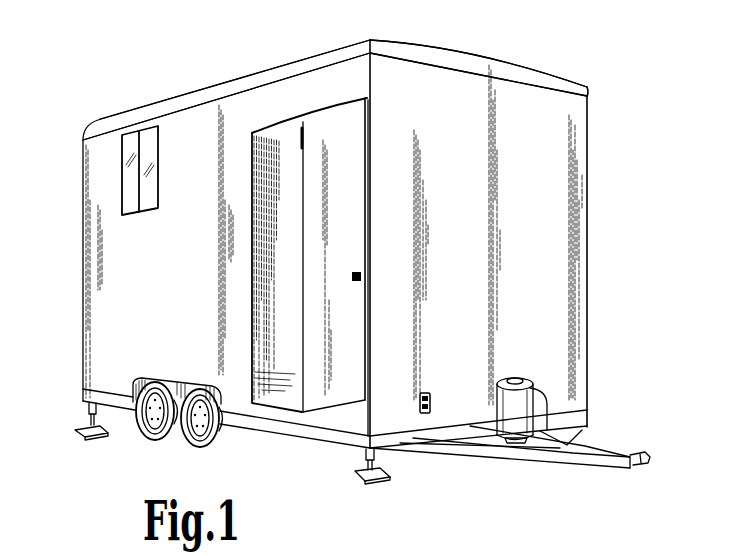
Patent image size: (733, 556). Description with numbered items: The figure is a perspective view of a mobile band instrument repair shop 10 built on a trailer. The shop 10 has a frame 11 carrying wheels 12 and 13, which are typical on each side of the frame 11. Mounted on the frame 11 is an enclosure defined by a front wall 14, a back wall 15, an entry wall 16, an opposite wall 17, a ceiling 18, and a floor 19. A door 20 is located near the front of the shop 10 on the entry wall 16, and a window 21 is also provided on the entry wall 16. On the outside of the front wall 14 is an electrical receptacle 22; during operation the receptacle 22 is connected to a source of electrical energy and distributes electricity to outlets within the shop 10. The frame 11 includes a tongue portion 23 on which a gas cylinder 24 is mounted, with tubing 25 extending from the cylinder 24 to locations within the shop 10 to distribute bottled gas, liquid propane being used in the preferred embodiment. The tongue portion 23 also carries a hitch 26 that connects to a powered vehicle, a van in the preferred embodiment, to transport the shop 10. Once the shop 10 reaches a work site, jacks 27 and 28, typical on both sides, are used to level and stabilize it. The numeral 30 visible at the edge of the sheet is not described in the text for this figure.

The mobile band instrument repair shop 10 is at (578, 68).
The frame 11 is at (88, 400).
The wheel 12 is at (155, 440).
The wheel 13 is at (222, 446).
The front wall 14 is at (543, 188).
The back wall 15 is at (83, 237).
The entry wall 16 is at (196, 115).
The opposite wall 17 is at (588, 215).
The ceiling 18 is at (444, 48).
The floor 19 is at (291, 404).
The door 20 is at (334, 410).
The window 21 is at (135, 140).
The electrical receptacle 22 is at (424, 414).
The tongue portion 23 is at (463, 447).
The gas cylinder 24 is at (514, 440).
The tubing 25 is at (550, 398).
The hitch 26 is at (646, 454).
The jack 27 is at (387, 480).
The jack 28 is at (77, 431).
The adjacent figure element 30 is at (535, 555).